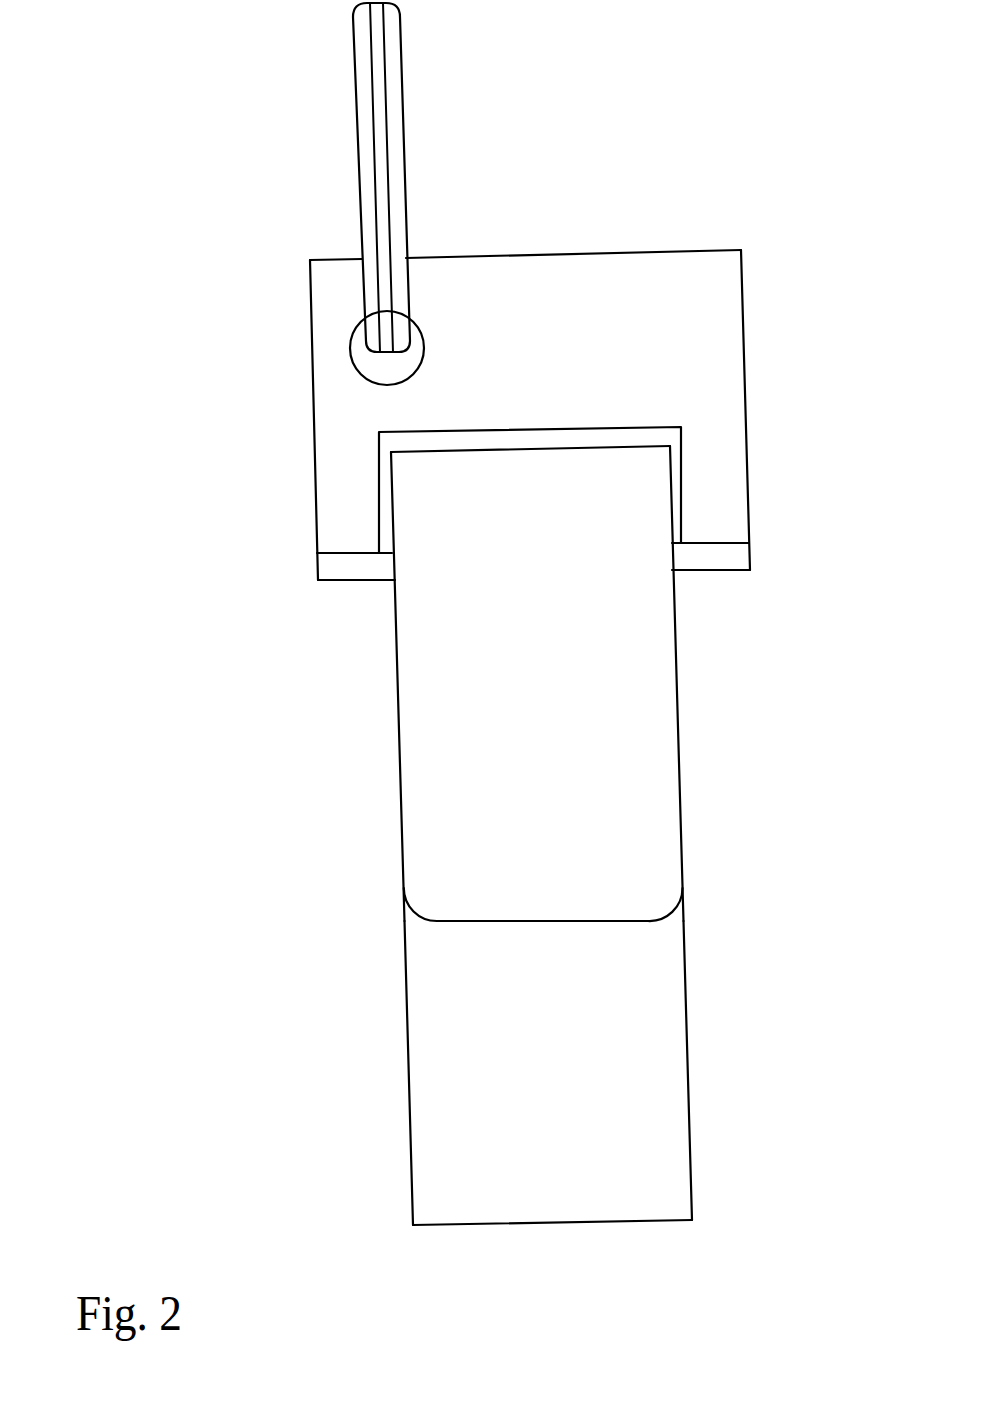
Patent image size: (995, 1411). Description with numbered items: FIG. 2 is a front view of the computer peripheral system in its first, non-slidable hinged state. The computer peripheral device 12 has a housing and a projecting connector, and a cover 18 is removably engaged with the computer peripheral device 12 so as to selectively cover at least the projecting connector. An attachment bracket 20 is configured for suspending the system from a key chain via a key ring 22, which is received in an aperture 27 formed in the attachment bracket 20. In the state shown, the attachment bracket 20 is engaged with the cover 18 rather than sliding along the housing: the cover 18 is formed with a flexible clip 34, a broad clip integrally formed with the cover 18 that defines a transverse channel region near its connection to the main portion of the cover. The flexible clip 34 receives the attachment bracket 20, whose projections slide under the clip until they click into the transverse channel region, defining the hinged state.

The computer peripheral device 12 is at (652, 1012).
The cover 18 is at (627, 734).
The attachment bracket 20 is at (678, 323).
The key ring 22 is at (398, 172).
The aperture 27 is at (380, 375).
The flexible clip 34 is at (504, 892).